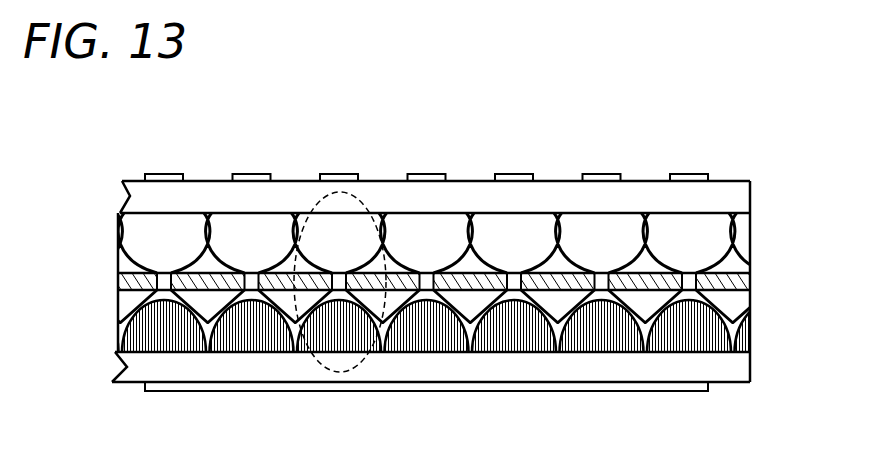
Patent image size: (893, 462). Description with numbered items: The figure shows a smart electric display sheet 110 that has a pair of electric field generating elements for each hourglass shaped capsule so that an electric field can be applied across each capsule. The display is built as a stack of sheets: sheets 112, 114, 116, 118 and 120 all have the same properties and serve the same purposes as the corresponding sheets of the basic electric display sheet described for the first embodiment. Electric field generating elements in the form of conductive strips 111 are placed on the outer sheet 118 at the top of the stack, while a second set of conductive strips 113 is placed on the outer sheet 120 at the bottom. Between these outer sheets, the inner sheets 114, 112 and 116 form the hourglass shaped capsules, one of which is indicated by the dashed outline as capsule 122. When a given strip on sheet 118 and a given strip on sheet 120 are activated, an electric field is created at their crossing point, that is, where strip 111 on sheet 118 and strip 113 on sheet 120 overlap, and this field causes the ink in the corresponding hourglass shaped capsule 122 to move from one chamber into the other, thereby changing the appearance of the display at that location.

The smart electric display sheet 110 is at (571, 147).
The electric field generating element 111 is at (167, 177).
The sheet 112 is at (751, 277).
The electric field generating element 113 is at (502, 386).
The sheet 114 is at (751, 232).
The sheet 116 is at (751, 318).
The sheet 118 is at (751, 188).
The sheet 120 is at (751, 365).
The hourglass shaped capsule 122 is at (368, 188).